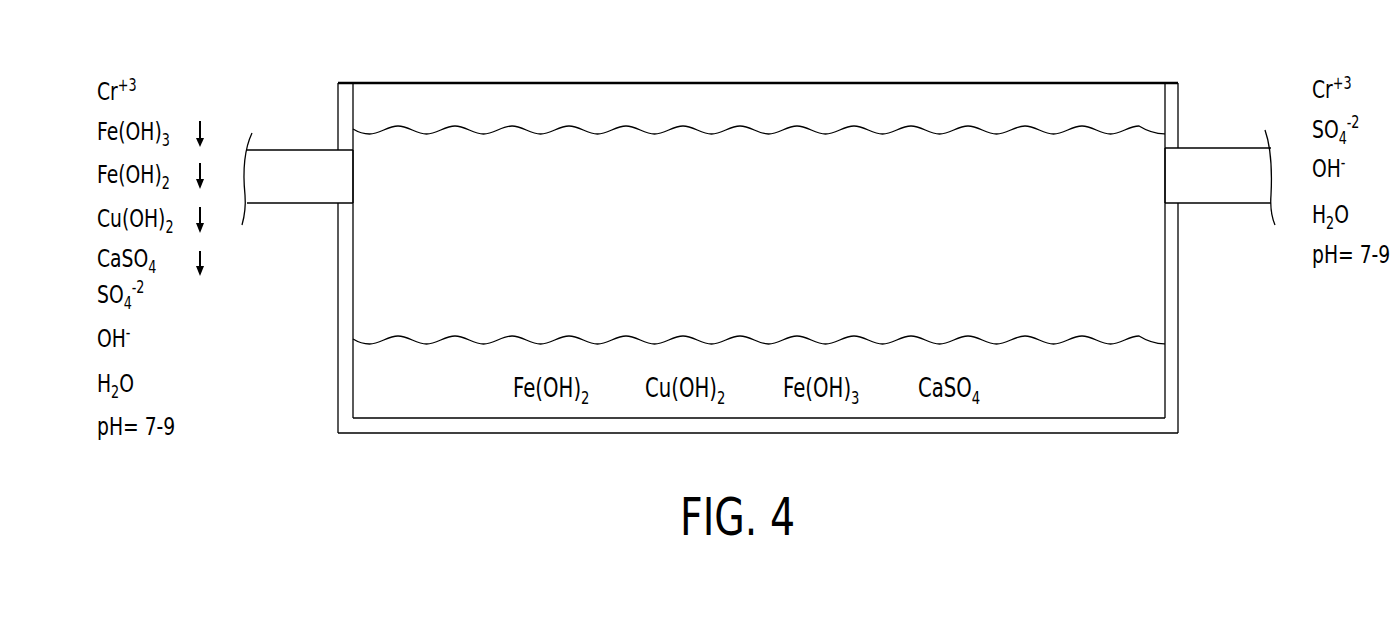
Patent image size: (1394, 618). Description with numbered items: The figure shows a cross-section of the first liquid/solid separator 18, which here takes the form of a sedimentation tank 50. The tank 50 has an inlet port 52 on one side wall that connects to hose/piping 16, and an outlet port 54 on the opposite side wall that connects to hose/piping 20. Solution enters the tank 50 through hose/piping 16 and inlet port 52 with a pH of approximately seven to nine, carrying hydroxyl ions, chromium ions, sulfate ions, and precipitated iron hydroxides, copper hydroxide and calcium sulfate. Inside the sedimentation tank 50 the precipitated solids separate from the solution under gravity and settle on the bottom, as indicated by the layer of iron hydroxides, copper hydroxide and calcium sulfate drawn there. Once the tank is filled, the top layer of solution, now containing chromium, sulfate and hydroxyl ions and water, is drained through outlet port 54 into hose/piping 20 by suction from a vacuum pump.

The hose/piping 16 is at (298, 165).
The first liquid/solid separator 18 is at (766, 202).
The hose/piping 20 is at (1222, 163).
The sedimentation tank 50 is at (1170, 302).
The inlet port 52 is at (337, 182).
The outlet port 54 is at (1187, 178).